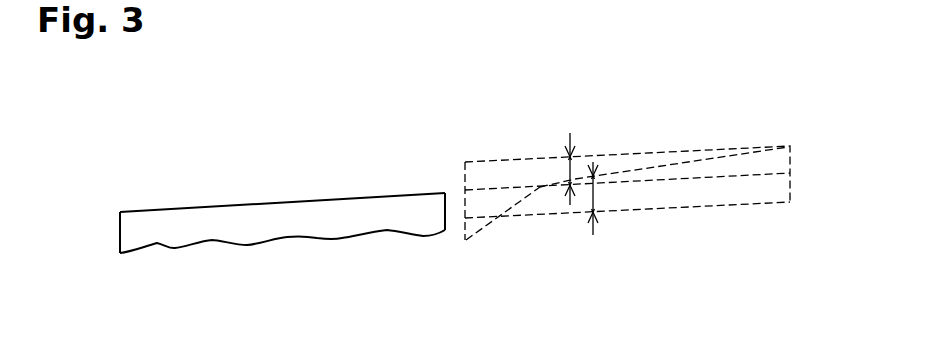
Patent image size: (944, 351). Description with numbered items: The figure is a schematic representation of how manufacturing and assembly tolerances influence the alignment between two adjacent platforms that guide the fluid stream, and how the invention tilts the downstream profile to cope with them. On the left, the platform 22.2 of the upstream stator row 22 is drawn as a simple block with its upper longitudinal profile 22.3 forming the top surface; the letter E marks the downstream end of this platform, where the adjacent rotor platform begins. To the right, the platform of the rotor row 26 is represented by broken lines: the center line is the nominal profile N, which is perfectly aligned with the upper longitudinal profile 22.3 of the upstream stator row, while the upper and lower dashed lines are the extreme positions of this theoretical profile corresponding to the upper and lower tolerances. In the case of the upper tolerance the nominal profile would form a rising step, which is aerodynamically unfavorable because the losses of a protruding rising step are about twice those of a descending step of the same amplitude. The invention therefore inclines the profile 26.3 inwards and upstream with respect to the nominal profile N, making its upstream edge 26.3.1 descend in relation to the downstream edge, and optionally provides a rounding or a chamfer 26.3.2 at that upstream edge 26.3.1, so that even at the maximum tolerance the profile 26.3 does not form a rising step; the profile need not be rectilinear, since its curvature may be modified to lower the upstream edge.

The stator row 22 is at (268, 168).
The platform 22.2 is at (130, 236).
The upper longitudinal profile 22.3 is at (181, 207).
The rotor row 26 is at (723, 125).
The profile 26.3 is at (653, 168).
The upstream edge 26.3.1 is at (467, 218).
The rounding or chamfer 26.3.2 is at (512, 217).
The plane / end face E is at (454, 182).
The nominal profile N is at (735, 177).